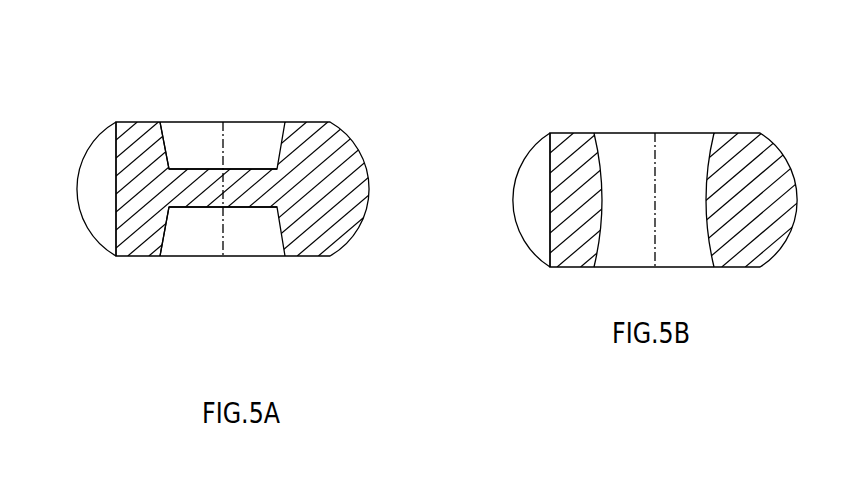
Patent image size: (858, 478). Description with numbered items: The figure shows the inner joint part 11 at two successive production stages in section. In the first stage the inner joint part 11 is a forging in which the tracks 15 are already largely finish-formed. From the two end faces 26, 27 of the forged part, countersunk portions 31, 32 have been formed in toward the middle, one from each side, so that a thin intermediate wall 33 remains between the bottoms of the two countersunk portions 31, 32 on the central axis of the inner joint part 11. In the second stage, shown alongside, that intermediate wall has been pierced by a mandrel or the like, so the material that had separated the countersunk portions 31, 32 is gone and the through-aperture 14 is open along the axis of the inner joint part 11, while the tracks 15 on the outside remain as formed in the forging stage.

In FIG. 5A, the inner joint part 11 is at (335, 153).
In FIG. 5B, the inner joint part 11 is at (758, 163).
In FIG. 5B, the through-aperture 14 is at (678, 160).
In FIG. 5A, the tracks 15 is at (89, 170).
In FIG. 5B, the tracks 15 is at (530, 177).
In FIG. 5A, the end face 26 is at (152, 122).
In FIG. 5A, the end face 27 is at (135, 258).
In FIG. 5A, the countersunk portion 31 is at (252, 138).
In FIG. 5A, the countersunk portion 32 is at (250, 237).
In FIG. 5A, the intermediate wall 33 is at (201, 190).